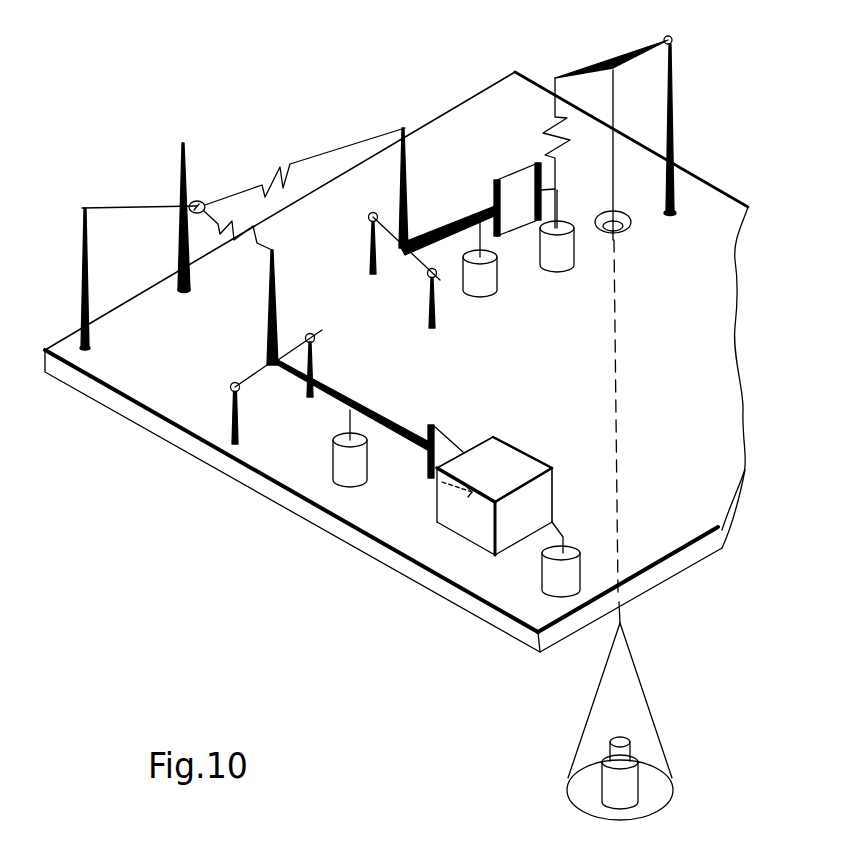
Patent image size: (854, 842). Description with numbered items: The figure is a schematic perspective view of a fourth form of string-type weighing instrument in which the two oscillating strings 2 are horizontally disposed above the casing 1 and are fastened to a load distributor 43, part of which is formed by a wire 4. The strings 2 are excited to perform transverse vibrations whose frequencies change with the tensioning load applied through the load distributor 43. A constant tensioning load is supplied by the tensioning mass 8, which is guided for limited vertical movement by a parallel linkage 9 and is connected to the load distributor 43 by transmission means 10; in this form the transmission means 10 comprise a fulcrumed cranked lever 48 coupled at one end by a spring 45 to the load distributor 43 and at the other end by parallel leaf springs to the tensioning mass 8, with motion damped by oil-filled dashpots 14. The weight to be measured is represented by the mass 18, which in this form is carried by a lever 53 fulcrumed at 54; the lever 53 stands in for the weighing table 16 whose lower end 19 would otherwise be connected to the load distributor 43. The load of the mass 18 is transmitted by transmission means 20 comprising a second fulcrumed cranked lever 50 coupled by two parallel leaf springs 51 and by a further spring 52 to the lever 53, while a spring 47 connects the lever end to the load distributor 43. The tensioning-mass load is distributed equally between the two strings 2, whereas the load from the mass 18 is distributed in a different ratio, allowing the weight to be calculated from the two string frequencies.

The casing 1 is at (396, 362).
The strings 2 is at (120, 206).
The wire 4 is at (432, 463).
The tensioning mass 8 is at (478, 497).
The parallel linkage 9 is at (490, 477).
The transmission means 10 is at (145, 508).
The dashpot 14 is at (483, 285).
The weighing table 16 is at (665, 790).
The mass to be weighed 18 is at (610, 788).
The lower end of the table 19 is at (613, 97).
The transmission means 20 is at (589, 12).
The load distributor 43 is at (203, 203).
The spring 45 is at (228, 215).
The spring 47 is at (285, 165).
The fulcrumed cranked lever 48 is at (298, 389).
The fulcrumed cranked lever 50 is at (422, 235).
The parallel leaf springs 51 is at (513, 218).
The spring 52 is at (547, 127).
The lever 53 is at (582, 66).
The fulcrum 54 is at (672, 126).